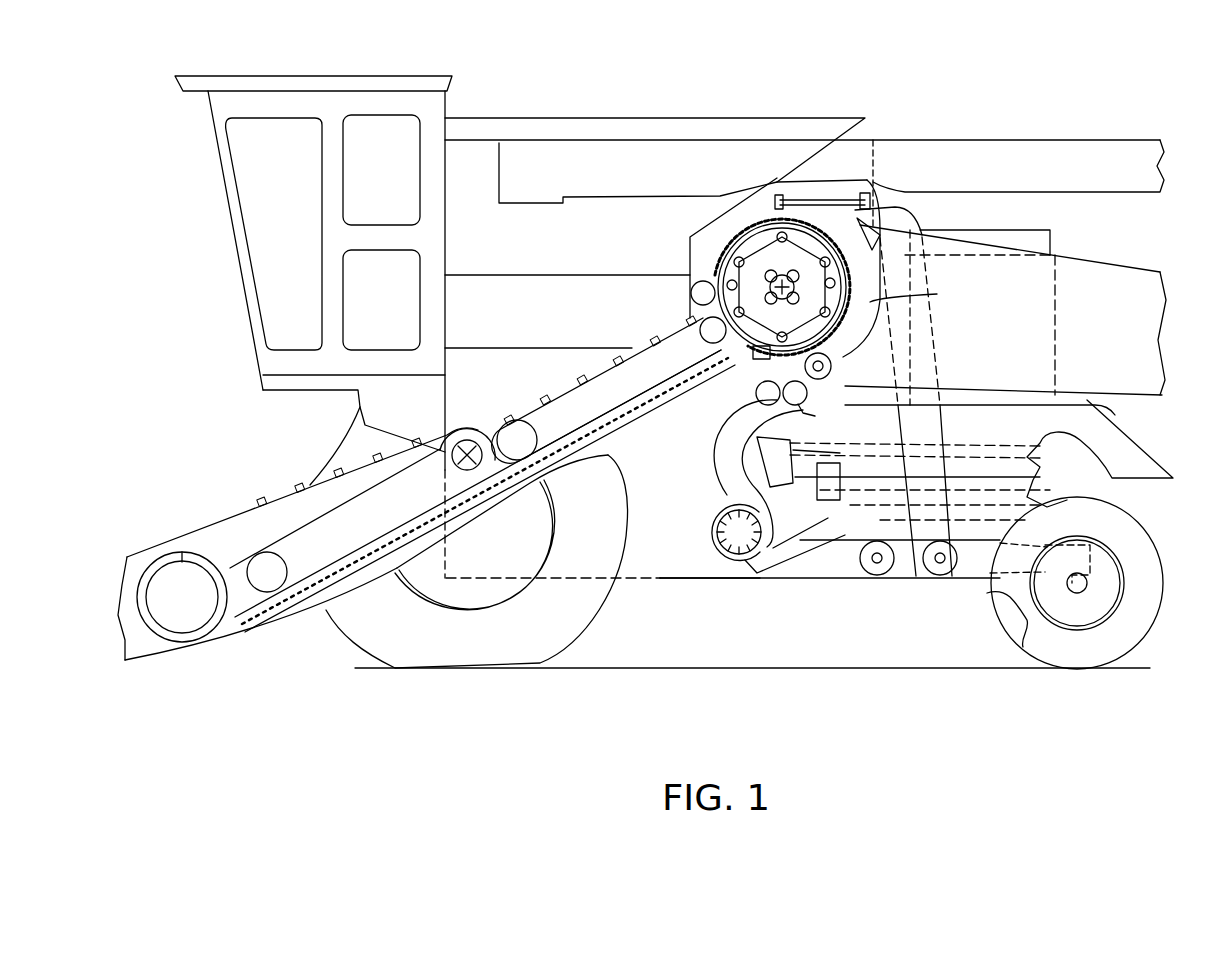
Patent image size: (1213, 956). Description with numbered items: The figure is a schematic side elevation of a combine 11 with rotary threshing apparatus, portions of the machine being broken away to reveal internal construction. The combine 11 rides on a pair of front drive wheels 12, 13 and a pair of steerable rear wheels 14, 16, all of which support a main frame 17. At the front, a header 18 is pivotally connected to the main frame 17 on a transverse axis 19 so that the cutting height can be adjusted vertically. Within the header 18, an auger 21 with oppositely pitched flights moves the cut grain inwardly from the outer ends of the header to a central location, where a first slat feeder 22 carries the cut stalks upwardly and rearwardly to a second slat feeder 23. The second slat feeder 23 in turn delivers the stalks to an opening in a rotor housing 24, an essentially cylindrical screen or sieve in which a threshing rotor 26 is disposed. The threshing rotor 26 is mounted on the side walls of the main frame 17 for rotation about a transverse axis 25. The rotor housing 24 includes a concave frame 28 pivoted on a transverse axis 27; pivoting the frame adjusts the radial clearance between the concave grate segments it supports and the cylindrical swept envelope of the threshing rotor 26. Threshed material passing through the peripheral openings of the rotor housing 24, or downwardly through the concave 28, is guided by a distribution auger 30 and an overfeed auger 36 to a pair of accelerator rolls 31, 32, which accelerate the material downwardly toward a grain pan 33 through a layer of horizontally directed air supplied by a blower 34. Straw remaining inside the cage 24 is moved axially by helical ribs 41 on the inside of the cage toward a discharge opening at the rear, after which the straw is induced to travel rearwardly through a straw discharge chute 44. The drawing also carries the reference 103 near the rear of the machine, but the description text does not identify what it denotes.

The combine 11 is at (724, 122).
The front drive wheel 12 is at (362, 641).
The front drive wheel 13 is at (326, 458).
The steerable rear wheel 14 is at (1150, 630).
The steerable rear wheel 16 is at (990, 622).
The main frame 17 is at (682, 580).
The header 18 is at (232, 513).
The transverse axis 19 is at (468, 440).
The auger 21 is at (155, 550).
The first slat feeder 22 is at (283, 548).
The second slat feeder 23 is at (572, 385).
The rotor housing 24 is at (688, 262).
The transverse axis 25 is at (795, 287).
The threshing rotor 26 is at (722, 247).
The transverse axis 27 is at (917, 292).
The concave frame 28 is at (760, 366).
The distribution auger 30 is at (831, 365).
The accelerator roll 31 is at (756, 396).
The accelerator roll 32 is at (810, 415).
The grain pan 33 is at (767, 472).
The blower 34 is at (717, 535).
The overfeed auger 36 is at (690, 290).
The helical ribs 41 is at (834, 236).
The straw discharge chute 44 is at (1115, 270).
The grain tank extension 103 is at (1013, 230).